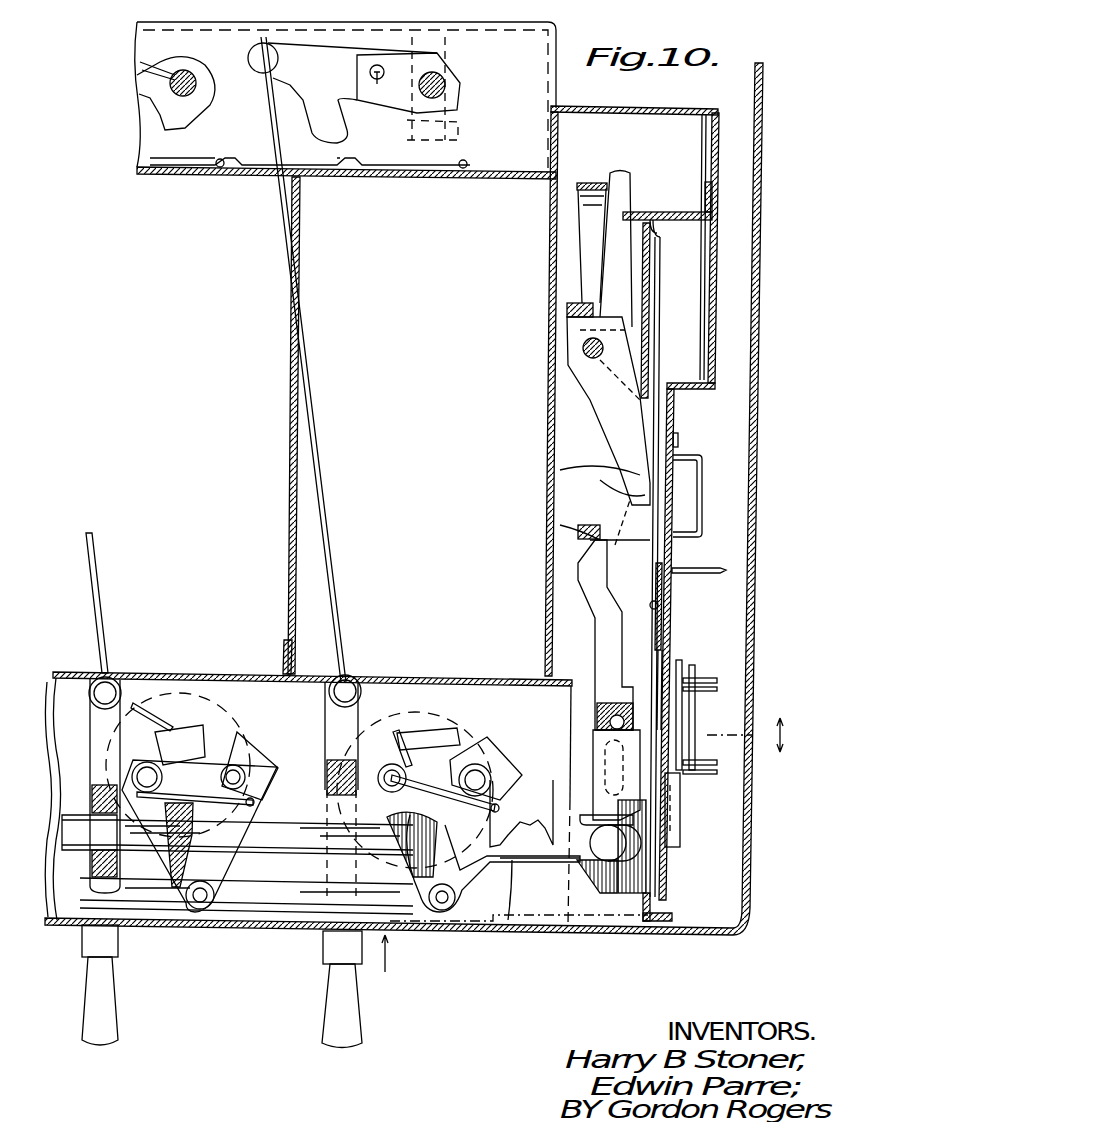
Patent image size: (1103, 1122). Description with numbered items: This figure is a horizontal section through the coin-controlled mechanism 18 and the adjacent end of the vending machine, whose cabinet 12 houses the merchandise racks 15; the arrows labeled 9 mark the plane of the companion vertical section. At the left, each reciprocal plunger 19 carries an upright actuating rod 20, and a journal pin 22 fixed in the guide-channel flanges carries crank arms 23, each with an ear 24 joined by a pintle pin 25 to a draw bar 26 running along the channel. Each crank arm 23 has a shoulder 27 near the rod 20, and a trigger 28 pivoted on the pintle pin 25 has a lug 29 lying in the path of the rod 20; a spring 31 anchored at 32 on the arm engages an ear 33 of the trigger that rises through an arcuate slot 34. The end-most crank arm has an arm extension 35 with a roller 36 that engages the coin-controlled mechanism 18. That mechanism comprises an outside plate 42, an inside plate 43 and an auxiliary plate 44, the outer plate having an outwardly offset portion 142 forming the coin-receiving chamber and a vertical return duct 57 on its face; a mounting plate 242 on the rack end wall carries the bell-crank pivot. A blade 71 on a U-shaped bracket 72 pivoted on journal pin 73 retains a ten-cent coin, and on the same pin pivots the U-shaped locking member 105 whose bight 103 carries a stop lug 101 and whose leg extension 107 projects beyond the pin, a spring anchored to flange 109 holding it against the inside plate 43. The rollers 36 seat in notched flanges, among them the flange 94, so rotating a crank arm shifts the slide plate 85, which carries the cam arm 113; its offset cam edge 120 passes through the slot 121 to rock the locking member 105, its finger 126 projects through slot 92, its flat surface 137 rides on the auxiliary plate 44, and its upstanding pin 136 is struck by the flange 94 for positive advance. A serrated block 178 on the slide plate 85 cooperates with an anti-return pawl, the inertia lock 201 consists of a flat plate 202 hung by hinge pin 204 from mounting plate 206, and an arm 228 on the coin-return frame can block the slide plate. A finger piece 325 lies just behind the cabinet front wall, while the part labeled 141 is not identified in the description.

The section line 9 is at (581, 854).
The cabinet 12 is at (759, 212).
The racks 15 is at (287, 394).
The coin-controlled mechanism 18 is at (680, 620).
The reciprocal plunger 19 is at (100, 1045).
The actuating rod 20 is at (352, 682).
The journal pin 22 is at (233, 765).
The crank arm 23 is at (265, 885).
The ear 24 is at (236, 900).
The pintle pin 25 is at (200, 910).
The draw bar 26 is at (300, 905).
The shoulder 27 is at (395, 764).
The trigger 28 is at (158, 878).
The lug 29 is at (180, 700).
The spring 31 is at (458, 810).
The spring anchor 32 is at (520, 860).
The ear 33 is at (195, 728).
The arcuate slot 34 is at (485, 758).
The arm extension 35 is at (533, 845).
The roller 36 is at (560, 845).
The outside plate 42 is at (673, 418).
The inside plate 43 is at (708, 162).
The auxiliary plate 44 is at (652, 240).
The duct 57 is at (702, 494).
The blade 71 is at (600, 420).
The U-shaped bracket 72 is at (590, 344).
The journal pin 73 is at (575, 352).
The slide plate 85 is at (660, 602).
The slot 92 is at (660, 357).
The flange 94 is at (613, 893).
The stop lug 101 is at (668, 548).
The bight portion 103 is at (630, 540).
The U-shaped locking member 105 is at (595, 470).
The leg extension 107 is at (620, 176).
The flange 109 is at (650, 212).
The cam arm 113 is at (603, 640).
The cam edge 120 is at (580, 548).
The slot 121 is at (590, 530).
The finger 126 is at (678, 440).
The upstanding pin 136 is at (610, 720).
The flat surface 137 is at (640, 492).
The plunger rod 141 is at (583, 182).
The offset portion 142 is at (717, 296).
The block 178 is at (680, 810).
The inertia lock 201 is at (718, 688).
The flat plate 202 is at (688, 752).
The hinge pin 204 is at (706, 735).
The mounting plate 206 is at (678, 662).
The arm 228 is at (728, 568).
The mounting plate 242 is at (548, 277).
The finger piece 325 is at (703, 940).